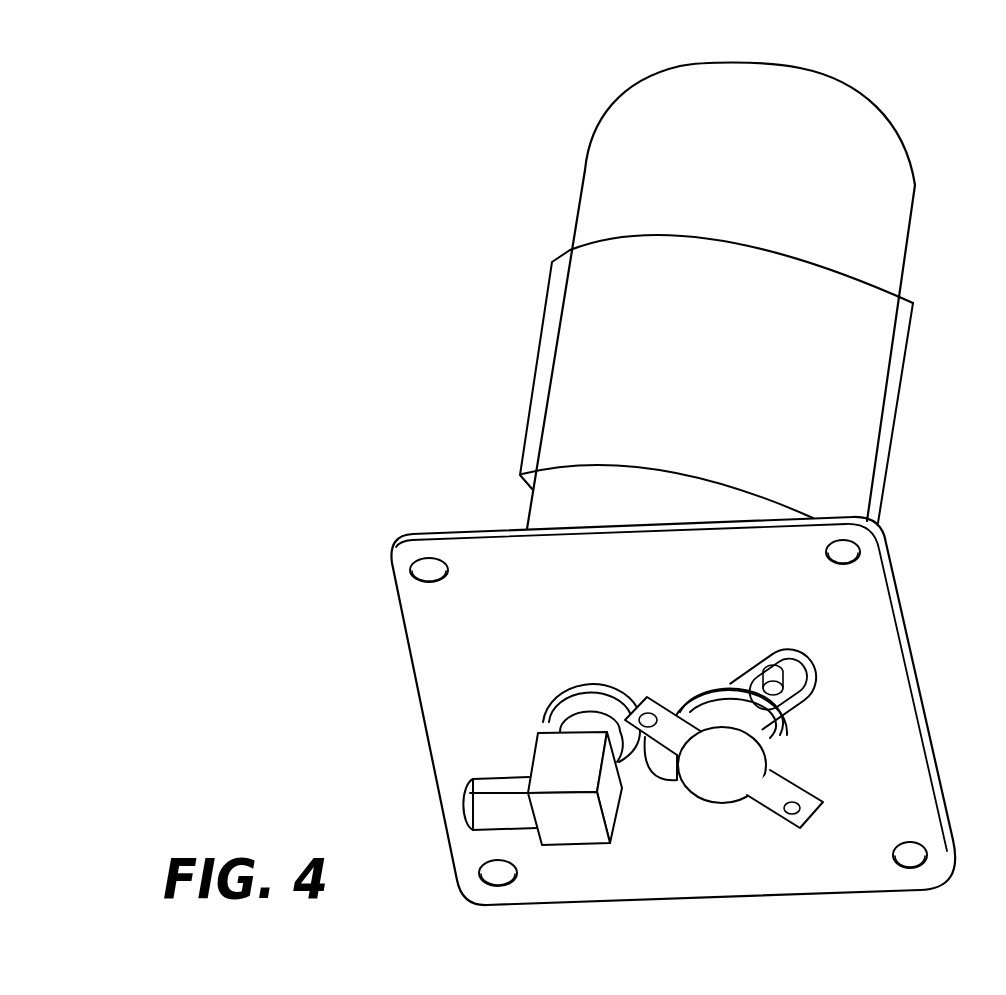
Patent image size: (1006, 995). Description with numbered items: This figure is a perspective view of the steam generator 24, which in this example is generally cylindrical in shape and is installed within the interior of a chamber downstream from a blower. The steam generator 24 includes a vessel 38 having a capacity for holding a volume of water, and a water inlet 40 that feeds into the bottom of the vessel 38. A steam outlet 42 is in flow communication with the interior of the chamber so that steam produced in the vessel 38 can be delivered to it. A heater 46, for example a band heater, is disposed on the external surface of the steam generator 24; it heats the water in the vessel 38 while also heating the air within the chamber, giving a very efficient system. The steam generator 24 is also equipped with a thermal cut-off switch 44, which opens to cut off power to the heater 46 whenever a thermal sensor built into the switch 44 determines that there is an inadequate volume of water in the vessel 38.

The steam generator 24 is at (585, 170).
The steam outlet 42 is at (838, 87).
The heater 46 is at (890, 390).
The vessel 38 is at (528, 507).
The water inlet 40 is at (455, 800).
The thermal cut-off switch 44 is at (697, 780).